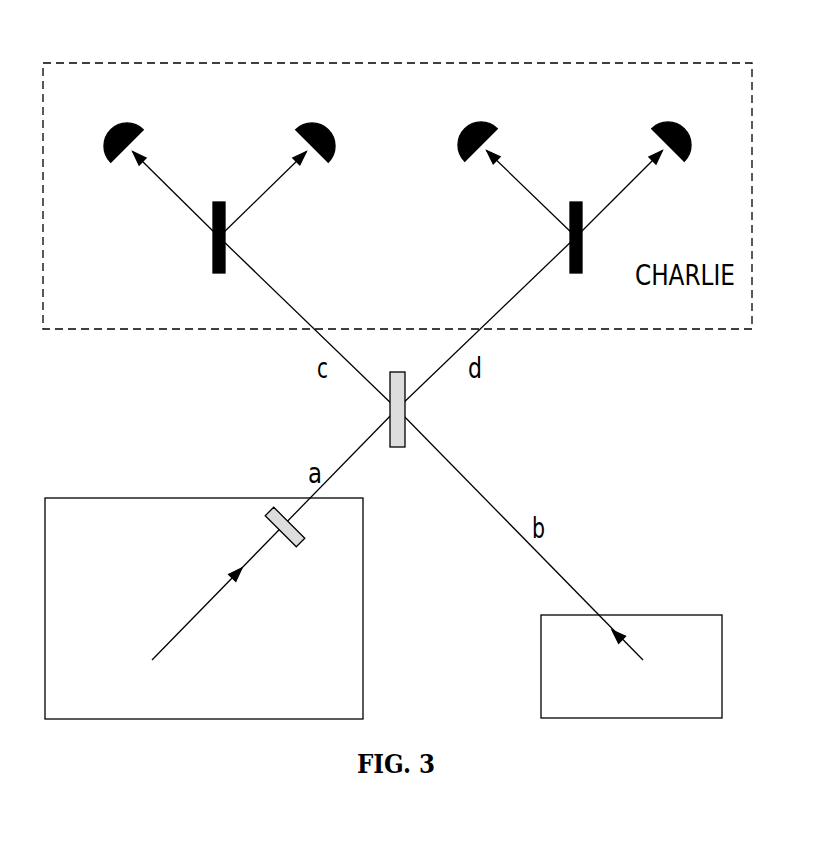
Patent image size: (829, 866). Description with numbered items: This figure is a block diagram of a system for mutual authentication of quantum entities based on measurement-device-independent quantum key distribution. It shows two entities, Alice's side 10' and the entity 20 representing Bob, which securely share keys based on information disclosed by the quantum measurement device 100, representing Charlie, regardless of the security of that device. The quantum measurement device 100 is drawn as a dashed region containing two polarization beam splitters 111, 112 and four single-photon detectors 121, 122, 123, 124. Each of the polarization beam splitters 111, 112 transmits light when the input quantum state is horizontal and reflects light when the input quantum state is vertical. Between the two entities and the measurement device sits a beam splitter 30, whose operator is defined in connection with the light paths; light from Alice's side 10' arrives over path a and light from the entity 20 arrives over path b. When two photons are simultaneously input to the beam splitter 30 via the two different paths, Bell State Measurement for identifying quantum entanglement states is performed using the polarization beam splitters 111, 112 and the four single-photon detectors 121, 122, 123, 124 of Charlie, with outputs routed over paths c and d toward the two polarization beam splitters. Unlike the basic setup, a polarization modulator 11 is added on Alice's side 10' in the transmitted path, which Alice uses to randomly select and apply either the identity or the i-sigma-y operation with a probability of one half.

The quantum measurement device 100 is at (393, 63).
The single-photon detector D1 121 is at (146, 132).
The single-photon detector D2 122 is at (333, 130).
The single-photon detector D3 123 is at (498, 128).
The single-photon detector D4 124 is at (690, 130).
The polarization beam splitter 111 is at (226, 237).
The polarization beam splitter 112 is at (583, 237).
The beam splitter 30 is at (406, 412).
The Alice's side 10' is at (204, 573).
The polarization modulator 11 is at (268, 517).
The entity 20 is at (683, 615).